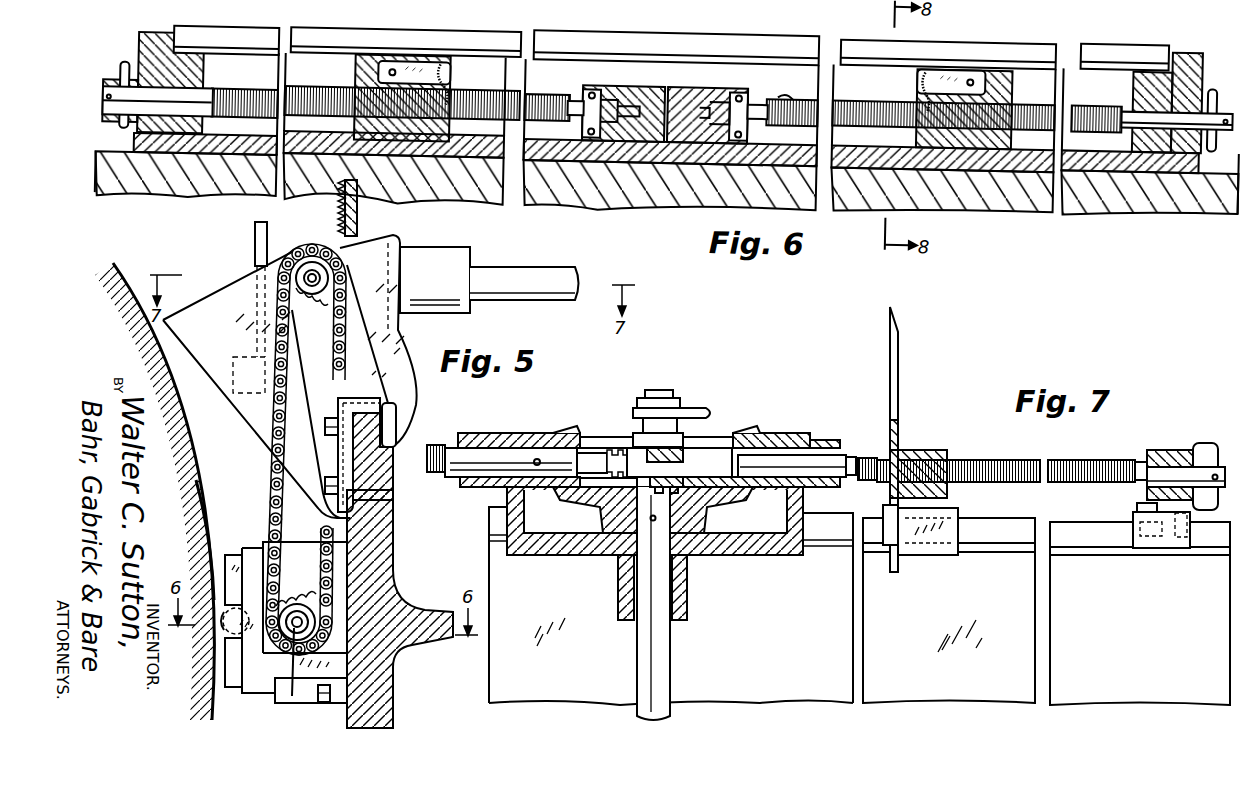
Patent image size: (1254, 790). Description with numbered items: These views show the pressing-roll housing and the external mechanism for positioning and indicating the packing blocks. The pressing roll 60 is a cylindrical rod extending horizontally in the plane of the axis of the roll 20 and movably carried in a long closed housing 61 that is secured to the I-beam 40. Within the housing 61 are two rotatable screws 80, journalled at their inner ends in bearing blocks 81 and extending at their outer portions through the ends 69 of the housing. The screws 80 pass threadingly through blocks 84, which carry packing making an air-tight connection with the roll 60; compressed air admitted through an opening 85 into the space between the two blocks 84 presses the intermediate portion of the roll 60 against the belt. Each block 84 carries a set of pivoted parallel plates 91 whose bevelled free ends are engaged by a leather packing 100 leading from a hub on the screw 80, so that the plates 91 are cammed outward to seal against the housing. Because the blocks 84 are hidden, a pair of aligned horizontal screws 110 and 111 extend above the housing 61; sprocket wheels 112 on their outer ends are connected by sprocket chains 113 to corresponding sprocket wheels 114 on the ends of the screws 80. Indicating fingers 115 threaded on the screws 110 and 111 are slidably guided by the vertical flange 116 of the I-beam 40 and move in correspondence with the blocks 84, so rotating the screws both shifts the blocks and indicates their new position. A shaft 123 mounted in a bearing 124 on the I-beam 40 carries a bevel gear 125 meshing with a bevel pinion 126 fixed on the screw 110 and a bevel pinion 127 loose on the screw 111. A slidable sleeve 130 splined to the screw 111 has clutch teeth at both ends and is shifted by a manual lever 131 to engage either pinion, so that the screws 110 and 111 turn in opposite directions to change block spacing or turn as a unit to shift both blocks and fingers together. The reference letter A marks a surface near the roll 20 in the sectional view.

In FIG. 5, the roll 20 is at (190, 442).
In FIG. 6, the I-beam 40 is at (1132, 186).
In FIG. 5, the I-beam 40 is at (396, 562).
In FIG. 7, the I-beam 40 is at (859, 606).
In FIG. 6, the pressing roll 60 is at (663, 30).
In FIG. 5, the pressing roll 60 is at (222, 608).
In FIG. 6, the housing 61 is at (308, 58).
In FIG. 5, the housing 61 is at (280, 688).
In FIG. 6, the ends of the housing 69 is at (146, 40).
In FIG. 6, the rotatable screws 80 is at (556, 96).
In FIG. 5, the rotatable screws 80 is at (294, 680).
In FIG. 6, the bearing blocks 81 is at (643, 86).
In FIG. 6, the blocks 84 is at (355, 74).
In FIG. 6, the opening 85 is at (786, 86).
In FIG. 6, the parallel plates 91 is at (414, 54).
In FIG. 6, the leather packing 100 is at (447, 57).
In FIG. 5, the screw 110 is at (312, 273).
In FIG. 7, the screw 110 is at (440, 452).
In FIG. 7, the screw 111 is at (1096, 470).
In FIG. 5, the sprocket wheels 112 is at (342, 391).
In FIG. 7, the sprocket wheels 112 is at (1202, 450).
In FIG. 5, the sprocket chains 113 is at (270, 486).
In FIG. 6, the sprocket wheels 114 is at (124, 72).
In FIG. 5, the sprocket wheels 114 is at (295, 600).
In FIG. 5, the indicating fingers 115 is at (224, 292).
In FIG. 7, the indicating fingers 115 is at (889, 366).
In FIG. 5, the vertical flange 116 is at (370, 428).
In FIG. 7, the vertical flange 116 is at (990, 540).
In FIG. 5, the shaft 123 is at (518, 293).
In FIG. 7, the shaft 123 is at (660, 664).
In FIG. 7, the bearing 124 is at (680, 558).
In FIG. 5, the bevel gear 125 is at (357, 215).
In FIG. 7, the bevel gear 125 is at (712, 506).
In FIG. 7, the bevel pinion 126 is at (544, 432).
In FIG. 7, the bevel pinion 127 is at (775, 432).
In FIG. 7, the slidable sleeve 130 is at (690, 445).
In FIG. 5, the manual lever 131 is at (256, 230).
In FIG. 7, the manual lever 131 is at (704, 410).
In FIG. 5, the surface A is at (210, 518).